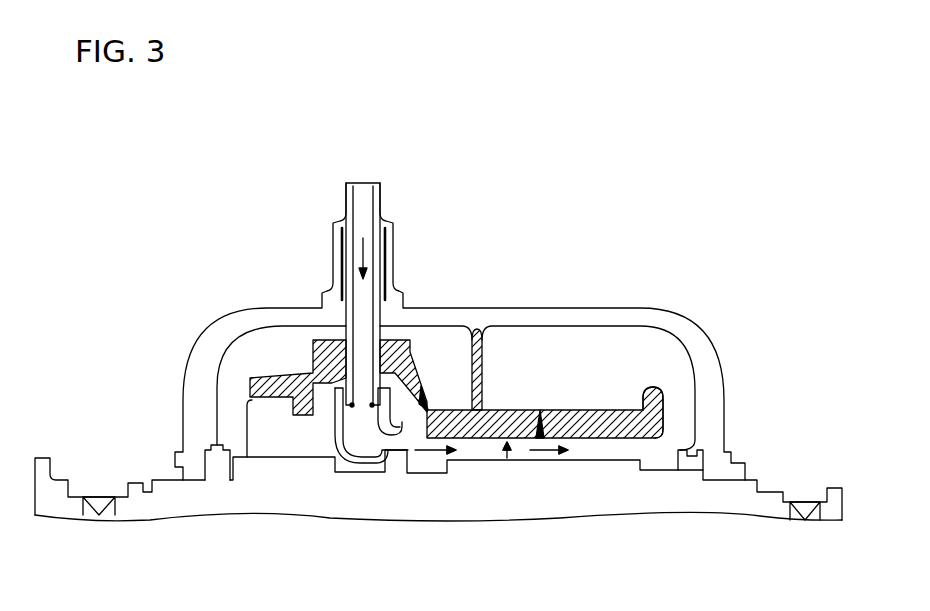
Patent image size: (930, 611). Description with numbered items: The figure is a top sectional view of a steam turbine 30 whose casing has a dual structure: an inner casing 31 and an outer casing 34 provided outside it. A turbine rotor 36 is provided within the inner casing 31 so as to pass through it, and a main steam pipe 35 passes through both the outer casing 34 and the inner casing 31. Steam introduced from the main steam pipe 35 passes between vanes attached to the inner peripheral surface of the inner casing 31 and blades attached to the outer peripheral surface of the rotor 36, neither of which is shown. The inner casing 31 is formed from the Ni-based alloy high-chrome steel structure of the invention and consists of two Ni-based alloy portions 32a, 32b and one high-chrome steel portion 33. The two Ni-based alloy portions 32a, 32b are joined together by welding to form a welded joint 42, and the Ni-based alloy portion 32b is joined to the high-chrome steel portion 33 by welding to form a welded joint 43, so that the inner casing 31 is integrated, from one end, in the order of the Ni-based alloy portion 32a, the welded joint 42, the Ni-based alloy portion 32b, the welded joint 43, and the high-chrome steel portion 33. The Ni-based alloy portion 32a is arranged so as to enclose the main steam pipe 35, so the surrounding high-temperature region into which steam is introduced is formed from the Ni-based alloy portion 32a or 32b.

The steam turbine 30 is at (223, 203).
The inner casing 31 is at (508, 458).
The Ni-based alloy portion 32a is at (280, 392).
The Ni-based alloy portion 32b is at (475, 440).
The high-chrome steel portion 33 is at (595, 440).
The outer casing 34 is at (612, 317).
The main steam pipe 35 is at (363, 203).
The turbine rotor 36 is at (142, 510).
The welded joint 42 is at (421, 390).
The welded joint 43 is at (540, 410).